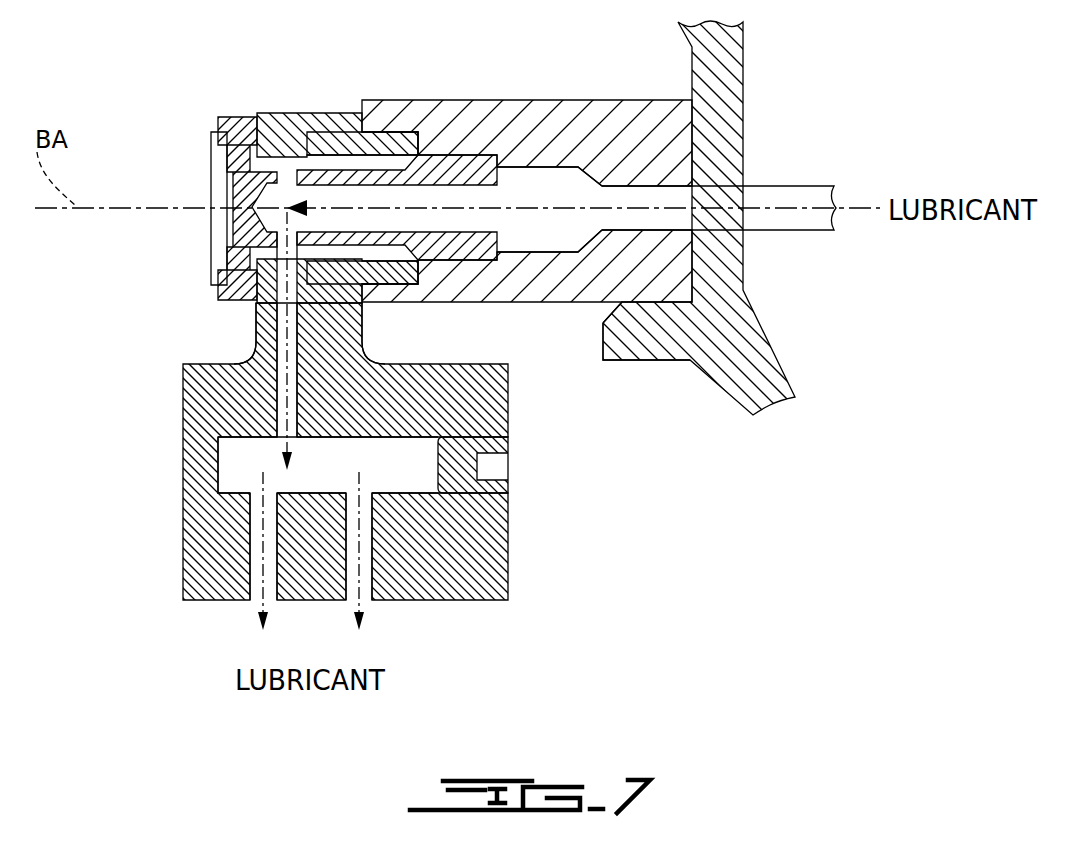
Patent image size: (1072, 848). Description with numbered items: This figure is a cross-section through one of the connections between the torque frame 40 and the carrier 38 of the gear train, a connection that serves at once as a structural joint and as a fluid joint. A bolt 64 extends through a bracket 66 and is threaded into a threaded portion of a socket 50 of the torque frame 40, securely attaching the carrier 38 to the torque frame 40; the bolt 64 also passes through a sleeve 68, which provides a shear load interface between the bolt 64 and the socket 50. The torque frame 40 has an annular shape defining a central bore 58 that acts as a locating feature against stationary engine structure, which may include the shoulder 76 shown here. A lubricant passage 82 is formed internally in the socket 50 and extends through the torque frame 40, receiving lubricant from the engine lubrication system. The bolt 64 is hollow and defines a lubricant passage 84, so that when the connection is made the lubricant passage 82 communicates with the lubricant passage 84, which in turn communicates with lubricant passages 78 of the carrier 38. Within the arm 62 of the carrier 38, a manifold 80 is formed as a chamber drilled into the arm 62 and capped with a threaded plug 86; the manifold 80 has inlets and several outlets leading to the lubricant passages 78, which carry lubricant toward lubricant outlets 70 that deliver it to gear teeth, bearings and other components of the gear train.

The carrier 38 is at (473, 543).
The torque frame 40 is at (520, 110).
The socket 50 is at (511, 424).
The central bore 58 is at (592, 303).
The arm 62 is at (531, 424).
The bolt 64 is at (227, 155).
The bracket 66 is at (256, 317).
The sleeve 68 is at (312, 138).
The lubricant outlets 70 is at (255, 605).
The shoulder 76 is at (640, 362).
The lubricant passages 78 is at (282, 406).
The manifold 80 is at (242, 459).
The lubricant passage 82 is at (550, 197).
The lubricant passage 84 is at (363, 197).
The threaded plug 86 is at (473, 462).